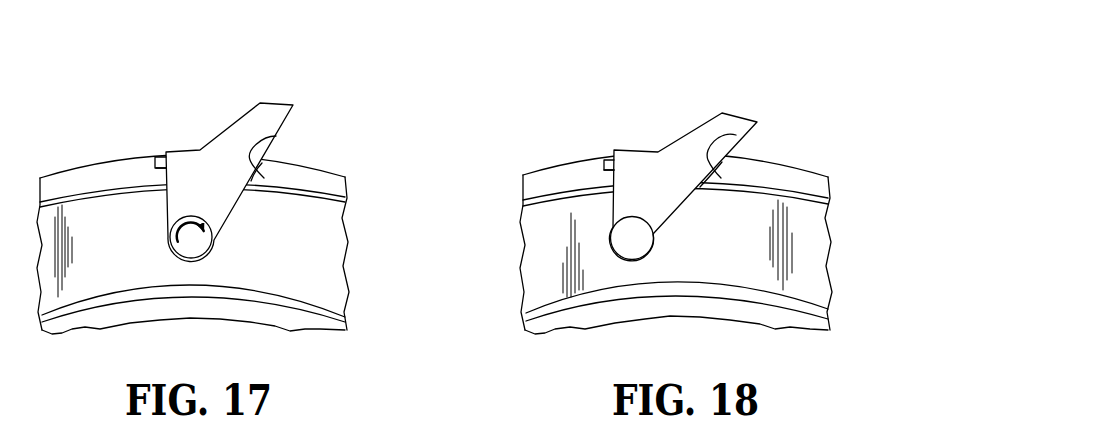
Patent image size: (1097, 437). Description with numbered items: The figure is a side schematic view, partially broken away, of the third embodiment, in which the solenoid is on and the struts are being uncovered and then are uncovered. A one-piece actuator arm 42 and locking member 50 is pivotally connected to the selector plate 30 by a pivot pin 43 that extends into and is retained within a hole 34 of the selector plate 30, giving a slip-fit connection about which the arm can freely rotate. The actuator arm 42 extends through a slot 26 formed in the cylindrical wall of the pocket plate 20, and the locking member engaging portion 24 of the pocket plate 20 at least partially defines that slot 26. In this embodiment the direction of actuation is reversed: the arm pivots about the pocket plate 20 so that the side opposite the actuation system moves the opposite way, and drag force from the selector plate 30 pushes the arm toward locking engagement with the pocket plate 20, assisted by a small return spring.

In FIG. 17, the pocket plate 20 is at (322, 166).
In FIG. 18, the pocket plate 20 is at (772, 160).
In FIG. 17, the locking member engaging portion 24 is at (150, 166).
In FIG. 18, the locking member engaging portion 24 is at (608, 163).
In FIG. 17, the slot 26 is at (263, 160).
In FIG. 18, the slot 26 is at (715, 160).
In FIG. 17, the selector plate 30 is at (348, 258).
In FIG. 18, the selector plate 30 is at (837, 258).
In FIG. 17, the hole 34 is at (207, 248).
In FIG. 18, the hole 34 is at (638, 256).
In FIG. 17, the actuator arm 42 is at (240, 118).
In FIG. 18, the actuator arm 42 is at (691, 129).
In FIG. 17, the pivot pin 43 is at (192, 237).
In FIG. 18, the pivot pin 43 is at (632, 238).
In FIG. 17, the locking member 50 is at (163, 171).
In FIG. 18, the locking member 50 is at (614, 172).